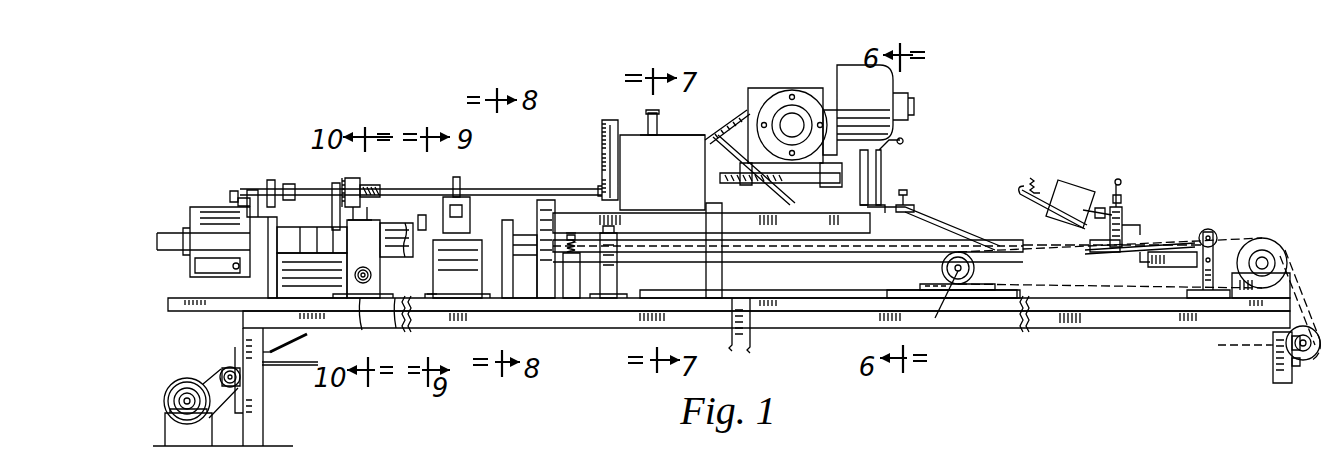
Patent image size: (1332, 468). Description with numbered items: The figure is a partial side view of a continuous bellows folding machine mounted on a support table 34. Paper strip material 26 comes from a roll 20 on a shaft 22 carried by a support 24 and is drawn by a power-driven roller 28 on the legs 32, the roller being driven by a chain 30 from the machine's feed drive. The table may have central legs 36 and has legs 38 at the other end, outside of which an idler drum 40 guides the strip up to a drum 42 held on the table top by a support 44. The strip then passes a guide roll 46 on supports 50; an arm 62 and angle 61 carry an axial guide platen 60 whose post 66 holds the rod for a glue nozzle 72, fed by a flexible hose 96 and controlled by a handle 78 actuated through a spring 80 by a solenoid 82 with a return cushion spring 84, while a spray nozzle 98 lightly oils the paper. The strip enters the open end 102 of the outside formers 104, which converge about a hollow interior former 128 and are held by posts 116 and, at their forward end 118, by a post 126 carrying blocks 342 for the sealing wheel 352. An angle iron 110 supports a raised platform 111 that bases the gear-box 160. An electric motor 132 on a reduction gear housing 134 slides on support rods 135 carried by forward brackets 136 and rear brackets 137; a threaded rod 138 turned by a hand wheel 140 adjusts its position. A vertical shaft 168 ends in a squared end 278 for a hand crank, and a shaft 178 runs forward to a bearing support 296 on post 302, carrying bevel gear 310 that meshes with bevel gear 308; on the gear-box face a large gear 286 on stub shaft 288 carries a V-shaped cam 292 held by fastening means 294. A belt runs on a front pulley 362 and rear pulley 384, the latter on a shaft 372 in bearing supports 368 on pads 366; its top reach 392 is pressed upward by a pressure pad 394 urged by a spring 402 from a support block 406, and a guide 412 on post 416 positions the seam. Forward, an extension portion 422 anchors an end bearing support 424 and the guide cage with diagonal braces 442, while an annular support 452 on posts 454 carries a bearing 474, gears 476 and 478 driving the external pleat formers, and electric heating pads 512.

The roll 20 is at (178, 380).
The shaft 22 is at (207, 405).
The support 24 is at (205, 440).
The paper strip material 26 is at (288, 365).
The power-driven roller 28 is at (226, 366).
The chain 30 is at (290, 345).
The legs 32 is at (262, 400).
The support table 34 is at (397, 330).
The central legs 36 is at (752, 338).
The legs 38 is at (1273, 370).
The idler drum 40 is at (1303, 362).
The drum 42 is at (1262, 238).
The support 44 is at (1258, 298).
The guide roll 46 is at (1208, 229).
The supports 50 is at (1205, 280).
The axial guide platen 60 is at (1110, 252).
The angle 61 is at (1142, 260).
The arm 62 is at (1165, 266).
The post 66 is at (1141, 232).
The glue nozzle 72 is at (1097, 243).
The control handle 78 is at (1116, 207).
The spring 80 is at (1100, 207).
The solenoid 82 is at (1080, 185).
The return cushion spring 84 is at (1036, 178).
The flexible hose 96 is at (1122, 207).
The spray nozzle 98 is at (912, 208).
The open end 102 is at (945, 242).
The outside formers 104 is at (875, 256).
The longitudinal angle iron 110 is at (697, 252).
The raised platform 111 is at (655, 210).
The posts 116 is at (618, 268).
The forward end 118 is at (410, 232).
The post 126 is at (460, 300).
The interior former 128 is at (398, 258).
The electric motor 132 is at (892, 88).
The reduction gear housing 134 is at (785, 88).
The support rods 135 is at (790, 185).
The forward brackets 136 is at (698, 170).
The rear brackets 137 is at (862, 185).
The threaded rod 138 is at (755, 178).
The hand wheel 140 is at (884, 183).
The gear-box 160 is at (727, 124).
The vertical shaft 168 is at (647, 134).
The shaft 178 is at (493, 190).
The squared end 278 is at (682, 137).
The large gear 286 is at (607, 122).
The stub shaft 288 is at (602, 182).
The V-shaped cam 292 is at (600, 156).
The adjustable fastening means 294 is at (600, 132).
The bearing support 296 is at (334, 185).
The post 302 is at (366, 326).
The bevel gear 308 is at (380, 194).
The bevel gear 310 is at (356, 178).
The blocks 342 is at (485, 232).
The sealing wheel 352 is at (458, 197).
The pulley 362 is at (352, 298).
The pads 366 is at (960, 292).
The bearing support member 368 is at (990, 288).
The shaft 372 is at (932, 310).
The rear pulley 384 is at (942, 265).
The top reach 392 is at (780, 262).
The pressure pad 394 is at (571, 300).
The spring 402 is at (572, 236).
The support block 406 is at (438, 300).
The guide 412 is at (556, 222).
The post 416 is at (536, 300).
The extension portion 422 is at (312, 248).
The end bearing support 424 is at (290, 265).
The diagonal braces 442 is at (172, 233).
The annular support 452 is at (262, 288).
The posts 454 is at (272, 228).
The bearing 474 is at (268, 182).
The gear 476 is at (232, 192).
The gear 478 is at (240, 202).
The electric heating pad 512 is at (200, 278).